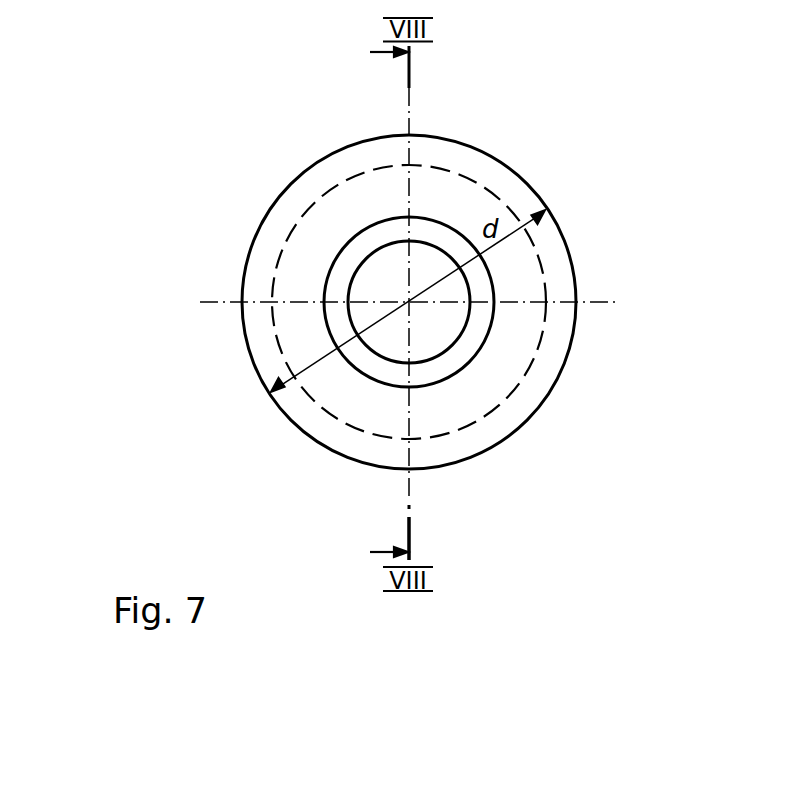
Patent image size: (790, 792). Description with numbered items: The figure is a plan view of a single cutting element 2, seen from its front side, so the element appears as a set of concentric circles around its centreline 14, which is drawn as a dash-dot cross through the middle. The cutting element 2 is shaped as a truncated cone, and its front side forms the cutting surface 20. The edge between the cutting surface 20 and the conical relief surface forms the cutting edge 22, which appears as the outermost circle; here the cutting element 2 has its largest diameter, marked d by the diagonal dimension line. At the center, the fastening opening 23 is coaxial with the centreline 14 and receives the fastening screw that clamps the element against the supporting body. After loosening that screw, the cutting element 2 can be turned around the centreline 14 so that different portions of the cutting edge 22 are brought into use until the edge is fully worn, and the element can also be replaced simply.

The cutting element 2 is at (213, 321).
The centreline 14 is at (409, 302).
The cutting surface 20 is at (303, 238).
The cutting edge 22 is at (305, 170).
The fastening opening 23 is at (363, 275).